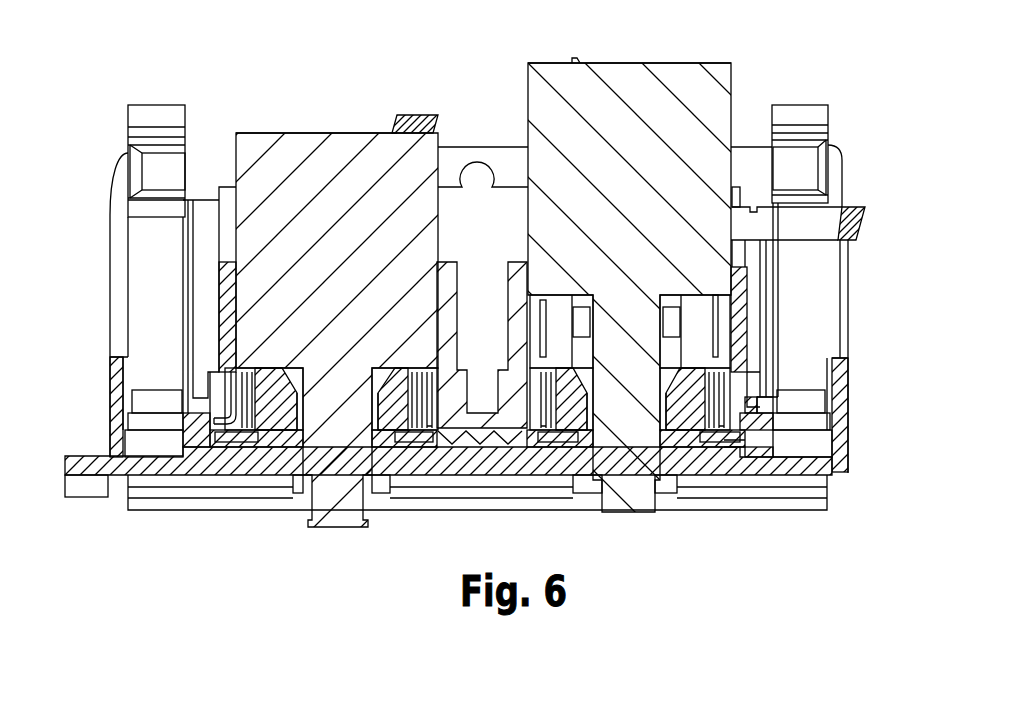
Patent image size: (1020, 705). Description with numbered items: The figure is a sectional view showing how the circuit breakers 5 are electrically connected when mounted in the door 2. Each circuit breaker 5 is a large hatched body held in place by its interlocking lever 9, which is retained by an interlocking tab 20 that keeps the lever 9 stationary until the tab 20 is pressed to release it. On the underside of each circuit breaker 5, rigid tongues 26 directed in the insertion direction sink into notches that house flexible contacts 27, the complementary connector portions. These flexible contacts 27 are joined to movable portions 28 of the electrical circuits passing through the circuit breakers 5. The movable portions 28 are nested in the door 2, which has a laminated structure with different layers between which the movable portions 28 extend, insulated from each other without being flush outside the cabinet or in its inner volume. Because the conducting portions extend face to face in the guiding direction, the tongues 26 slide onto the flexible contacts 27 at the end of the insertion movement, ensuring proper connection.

The door 2 is at (122, 513).
The circuit breaker 5 is at (309, 118).
The interlocking lever 9 is at (415, 115).
The interlocking tab 20 is at (392, 130).
The rigid tongue 26 is at (540, 327).
The flexible contact 27 is at (543, 430).
The movable portion 28 is at (407, 450).